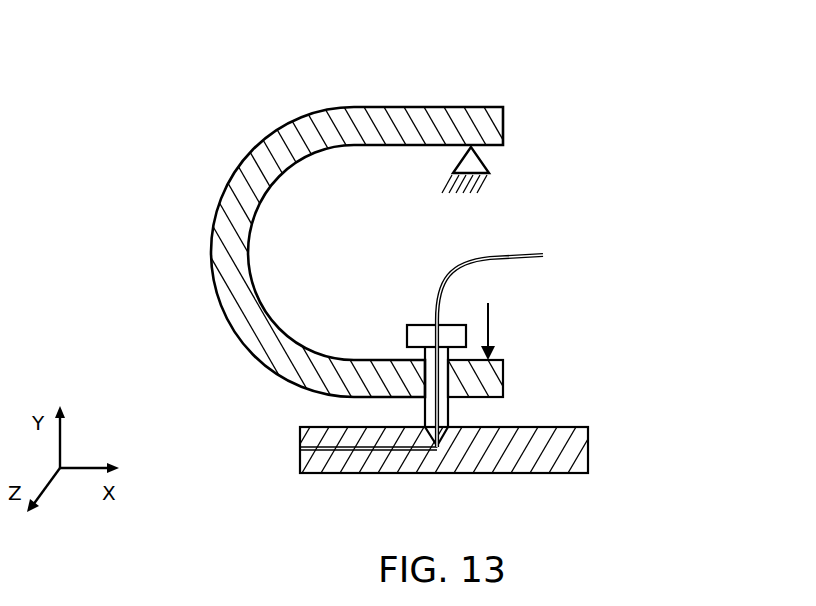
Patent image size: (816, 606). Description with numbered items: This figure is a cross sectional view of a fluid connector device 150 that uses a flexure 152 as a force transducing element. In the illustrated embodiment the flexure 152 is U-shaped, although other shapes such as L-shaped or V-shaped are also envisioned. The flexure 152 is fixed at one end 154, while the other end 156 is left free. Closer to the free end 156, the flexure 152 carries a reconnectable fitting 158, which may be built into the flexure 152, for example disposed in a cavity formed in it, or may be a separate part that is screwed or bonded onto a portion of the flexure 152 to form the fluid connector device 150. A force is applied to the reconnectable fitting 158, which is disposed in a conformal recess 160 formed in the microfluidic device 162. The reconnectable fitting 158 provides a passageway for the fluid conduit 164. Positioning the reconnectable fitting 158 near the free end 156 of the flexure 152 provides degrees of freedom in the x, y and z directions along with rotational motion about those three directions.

The fluid connector device 150 is at (581, 80).
The flexure 152 is at (222, 194).
The fixed end 154 is at (480, 158).
The free end 156 is at (503, 380).
The reconnectable fitting 158 is at (417, 325).
The conformal recess 160 is at (439, 449).
The microfluidic device 162 is at (588, 430).
The fluid conduit 164 is at (518, 258).